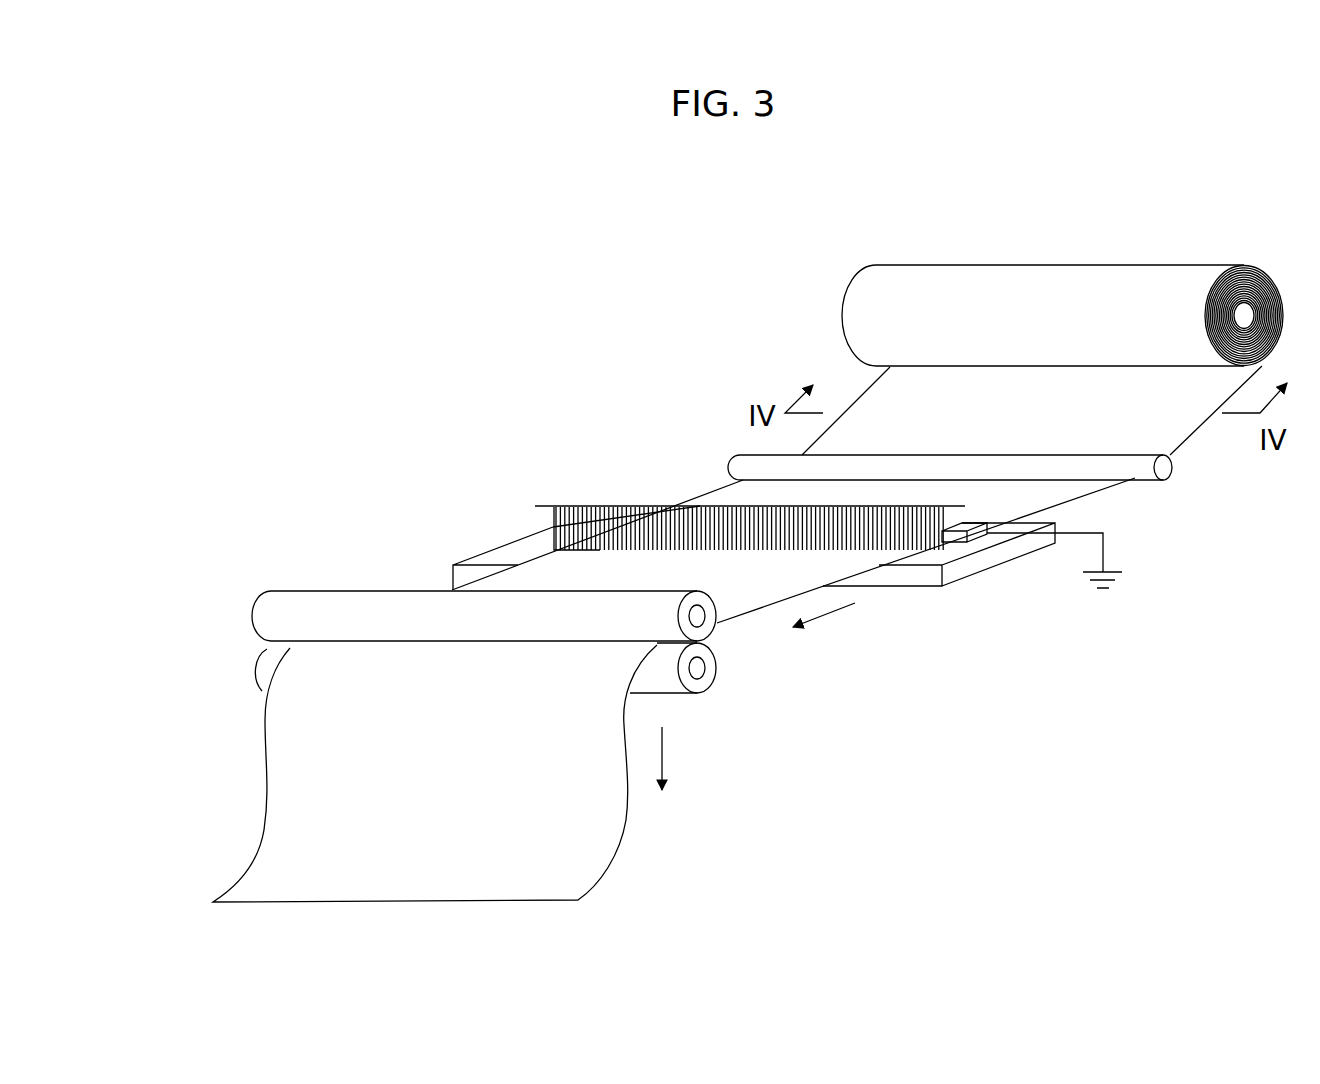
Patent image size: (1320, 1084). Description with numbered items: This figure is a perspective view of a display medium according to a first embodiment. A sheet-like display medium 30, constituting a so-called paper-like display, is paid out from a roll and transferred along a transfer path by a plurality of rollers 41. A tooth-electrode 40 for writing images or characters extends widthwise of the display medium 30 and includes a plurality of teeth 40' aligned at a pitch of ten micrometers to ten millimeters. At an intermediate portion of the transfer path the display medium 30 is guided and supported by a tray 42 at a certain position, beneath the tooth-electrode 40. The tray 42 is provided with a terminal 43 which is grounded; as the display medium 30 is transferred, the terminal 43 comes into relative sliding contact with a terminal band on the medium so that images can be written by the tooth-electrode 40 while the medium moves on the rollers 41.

The display medium 30 is at (855, 315).
The tooth-electrode 40 is at (750, 485).
The teeth 40' is at (530, 493).
The rollers 41 is at (1138, 472).
The tray 42 is at (490, 557).
The terminal 43 is at (960, 545).